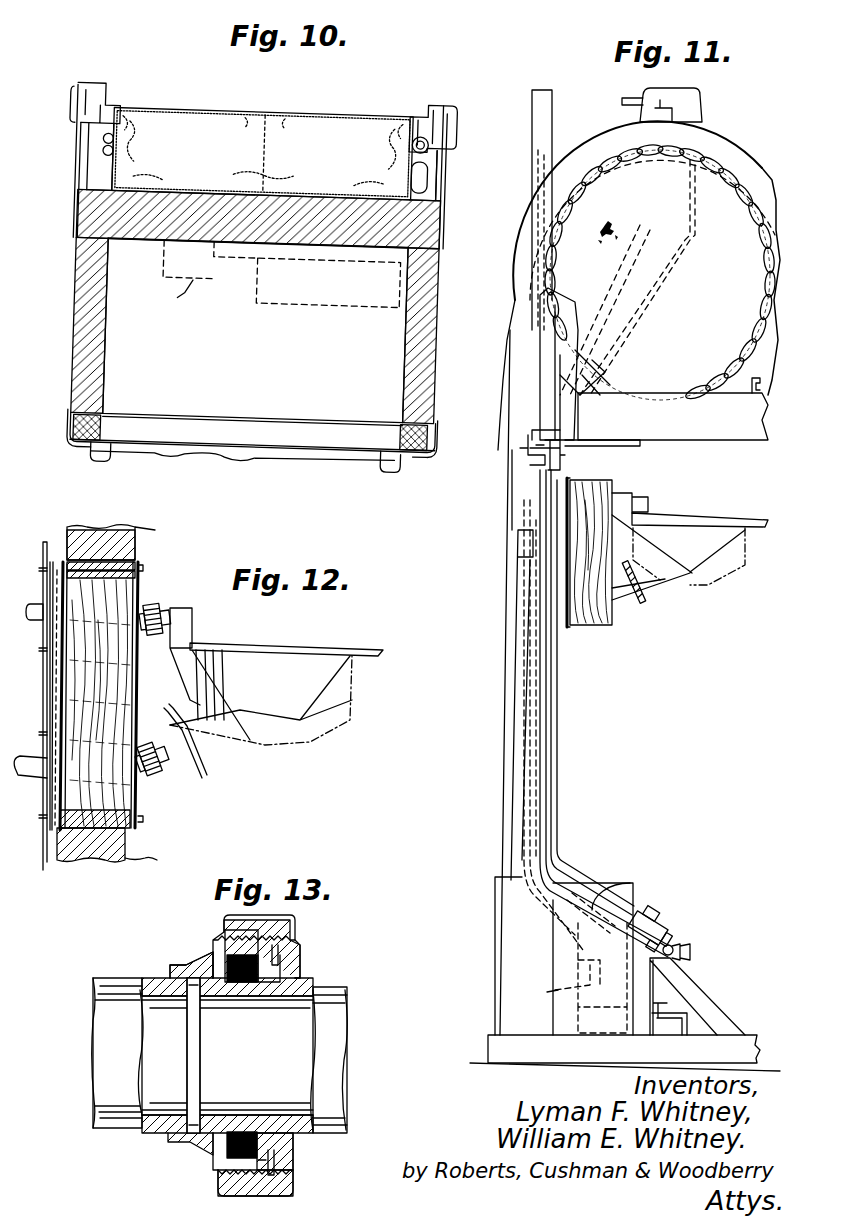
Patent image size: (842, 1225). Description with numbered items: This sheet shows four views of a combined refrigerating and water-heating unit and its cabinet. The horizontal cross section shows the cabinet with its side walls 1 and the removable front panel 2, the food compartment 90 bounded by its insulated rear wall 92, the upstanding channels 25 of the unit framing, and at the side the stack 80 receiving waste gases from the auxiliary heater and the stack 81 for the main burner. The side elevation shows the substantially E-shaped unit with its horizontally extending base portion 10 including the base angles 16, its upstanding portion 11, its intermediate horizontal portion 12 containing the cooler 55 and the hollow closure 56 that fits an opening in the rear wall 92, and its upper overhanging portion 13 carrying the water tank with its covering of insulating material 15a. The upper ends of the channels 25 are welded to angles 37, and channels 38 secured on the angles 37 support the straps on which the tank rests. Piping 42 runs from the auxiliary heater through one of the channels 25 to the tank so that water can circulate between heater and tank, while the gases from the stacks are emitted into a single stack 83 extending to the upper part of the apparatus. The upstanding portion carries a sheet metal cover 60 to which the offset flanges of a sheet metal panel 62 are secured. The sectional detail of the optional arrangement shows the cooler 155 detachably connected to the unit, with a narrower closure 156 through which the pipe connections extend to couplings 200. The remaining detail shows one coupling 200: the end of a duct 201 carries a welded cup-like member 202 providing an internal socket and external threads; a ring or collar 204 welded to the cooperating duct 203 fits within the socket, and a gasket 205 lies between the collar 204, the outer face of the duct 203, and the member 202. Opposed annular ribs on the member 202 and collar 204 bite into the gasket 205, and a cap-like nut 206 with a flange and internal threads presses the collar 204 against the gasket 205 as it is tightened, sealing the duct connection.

In FIG. 10, the side walls 1 is at (75, 325).
In FIG. 10, the removable front panel 2 is at (200, 458).
In FIG. 11, the base portion 10 is at (676, 902).
In FIG. 10, the upstanding portion 11 is at (324, 100).
In FIG. 11, the upstanding portion 11 is at (503, 716).
In FIG. 11, the intermediate horizontal portion 12 is at (728, 603).
In FIG. 11, the upper overhanging portion 13 is at (758, 138).
In FIG. 11, the insulating material 15a is at (776, 190).
In FIG. 10, the base angles 16 is at (103, 100).
In FIG. 11, the base angles 16 is at (625, 1014).
In FIG. 10, the upstanding channels 25 is at (108, 170).
In FIG. 11, the upstanding channels 25 is at (495, 930).
In FIG. 11, the angles 37 is at (654, 364).
In FIG. 11, the channels 38 is at (760, 388).
In FIG. 11, the piping 42 is at (545, 512).
In FIG. 11, the cooler 55 is at (700, 517).
In FIG. 11, the closure 56 is at (616, 642).
In FIG. 12, the sheet metal cover 60 is at (44, 548).
In FIG. 12, the sheet metal panel 62 is at (50, 692).
In FIG. 10, the stack 80 is at (418, 175).
In FIG. 10, the stack 81 is at (424, 142).
In FIG. 11, the single stack 83 is at (552, 103).
In FIG. 10, the food compartment 90 is at (258, 374).
In FIG. 10, the rear wall 92 is at (150, 243).
In FIG. 12, the cooler 155 is at (292, 634).
In FIG. 12, the closure 156 is at (150, 584).
In FIG. 12, the couplings 200 is at (150, 658).
In FIG. 13, the couplings 200 is at (328, 947).
In FIG. 13, the duct 201 is at (150, 980).
In FIG. 13, the cup-like member 202 is at (186, 968).
In FIG. 13, the cooperating duct 203 is at (330, 988).
In FIG. 13, the ring 204 is at (270, 1150).
In FIG. 13, the gasket 205 is at (228, 1146).
In FIG. 13, the cap-like nut 206 is at (292, 1180).